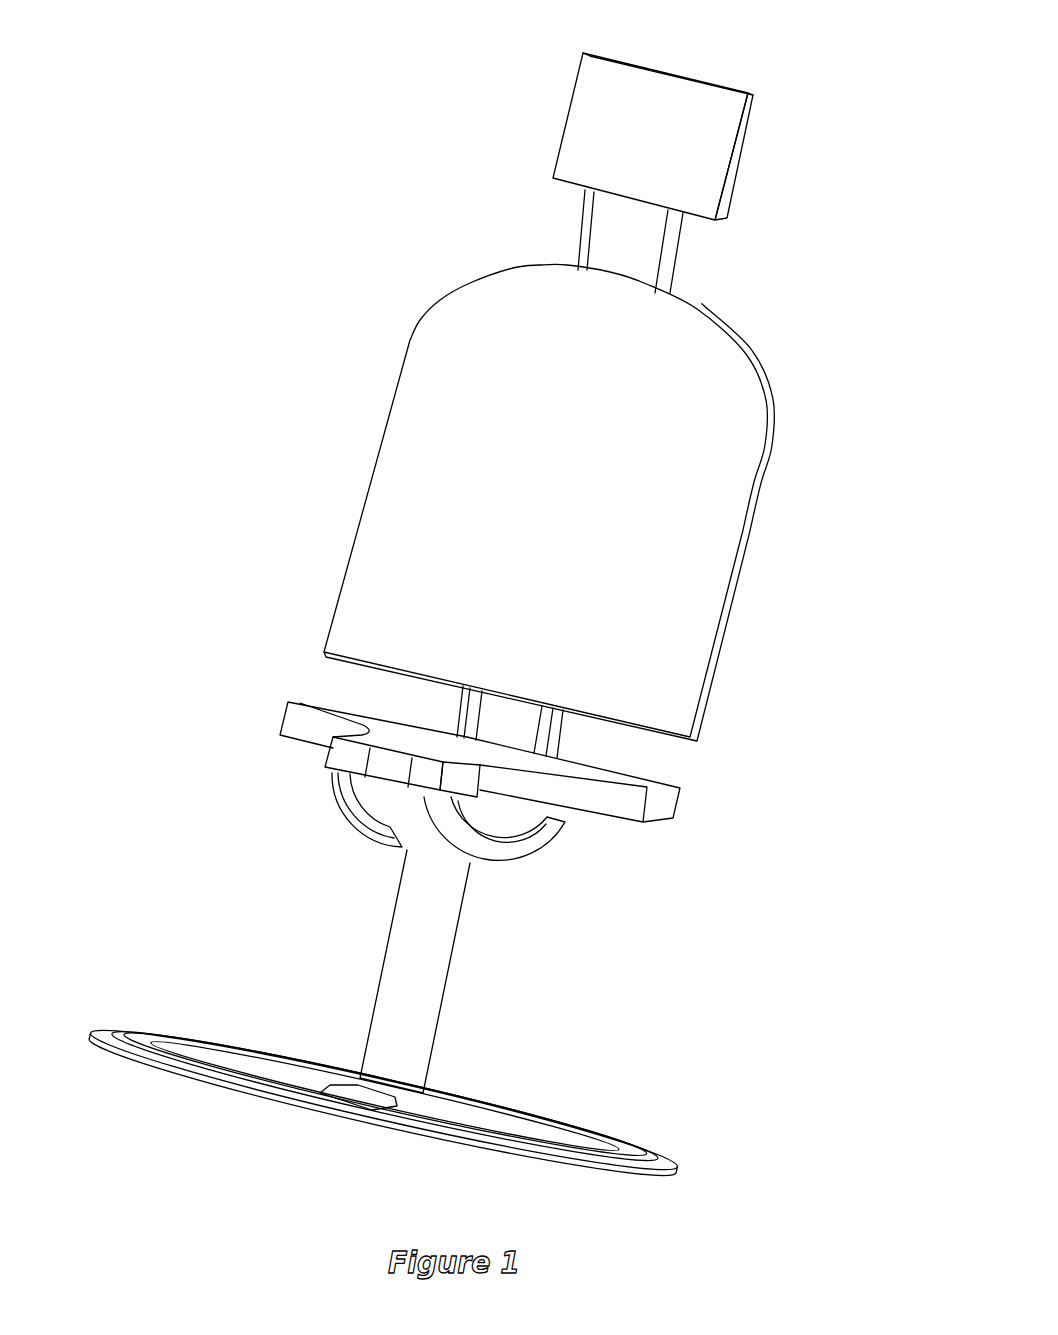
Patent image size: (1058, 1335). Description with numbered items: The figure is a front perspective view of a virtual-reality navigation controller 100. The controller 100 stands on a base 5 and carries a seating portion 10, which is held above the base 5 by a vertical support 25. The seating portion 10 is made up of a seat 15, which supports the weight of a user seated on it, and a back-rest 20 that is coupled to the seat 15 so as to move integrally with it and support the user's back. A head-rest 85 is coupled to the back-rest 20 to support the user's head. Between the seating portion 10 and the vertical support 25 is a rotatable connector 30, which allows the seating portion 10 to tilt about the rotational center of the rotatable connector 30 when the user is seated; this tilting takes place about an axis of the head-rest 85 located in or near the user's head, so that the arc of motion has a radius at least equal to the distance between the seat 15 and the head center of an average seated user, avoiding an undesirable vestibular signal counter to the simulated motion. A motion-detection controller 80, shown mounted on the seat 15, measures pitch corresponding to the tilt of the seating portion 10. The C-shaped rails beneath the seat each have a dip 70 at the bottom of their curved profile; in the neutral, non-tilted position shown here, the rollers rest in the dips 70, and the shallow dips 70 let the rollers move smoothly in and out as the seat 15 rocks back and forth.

The virtual-reality navigation controller 100 is at (441, 26).
The seating portion 10 is at (312, 572).
The head-rest 85 is at (588, 128).
The back-rest 20 is at (450, 432).
The seat 15 is at (682, 808).
The rotatable connector 30 is at (336, 813).
The motion-detection controller 80 is at (377, 780).
The dip 70 is at (389, 843).
The vertical support 25 is at (427, 978).
The base 5 is at (686, 1173).